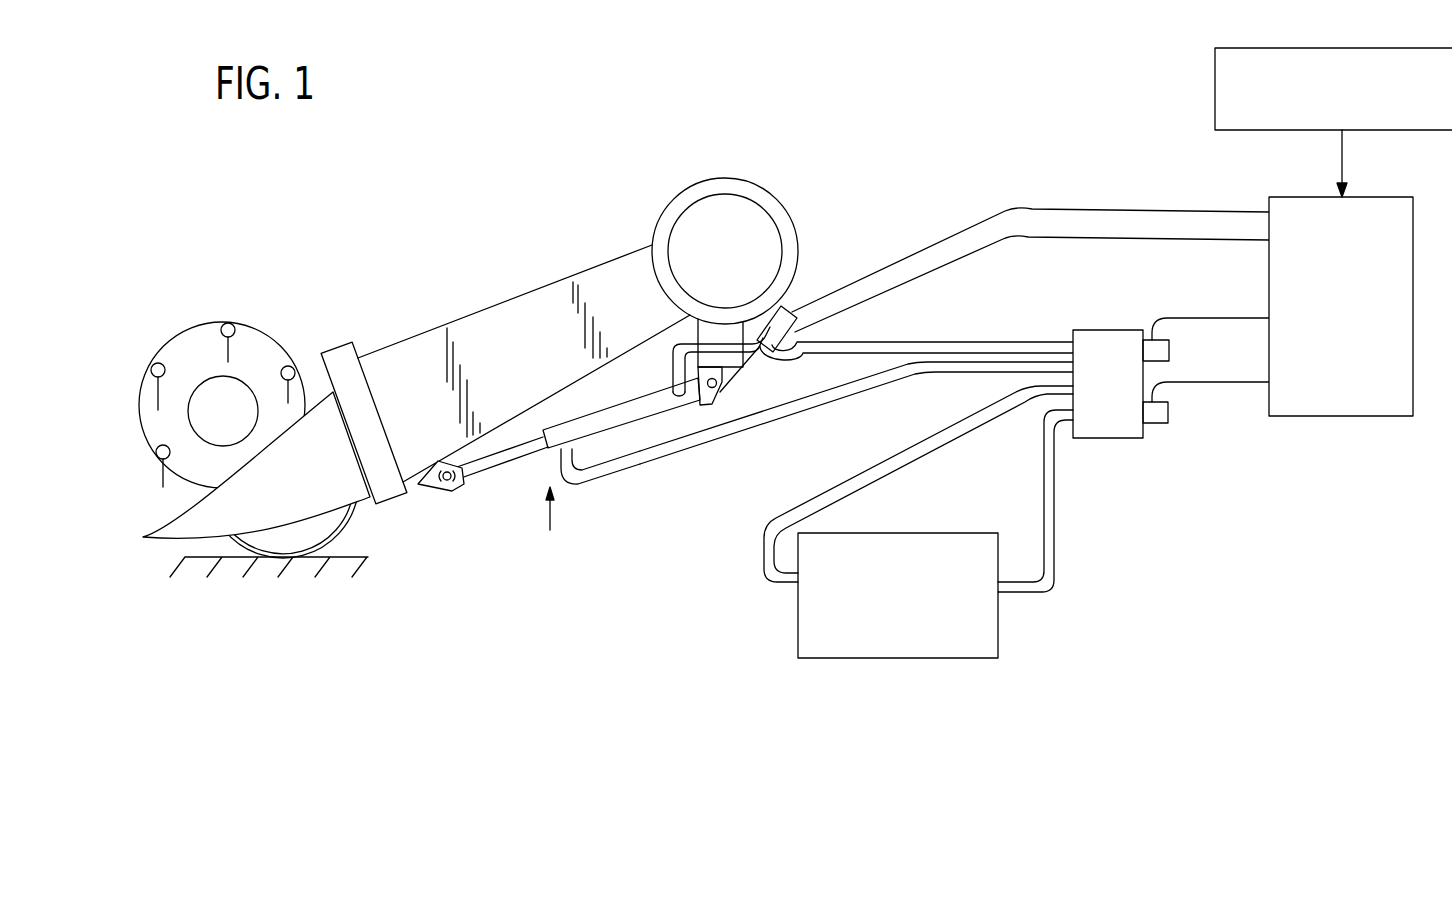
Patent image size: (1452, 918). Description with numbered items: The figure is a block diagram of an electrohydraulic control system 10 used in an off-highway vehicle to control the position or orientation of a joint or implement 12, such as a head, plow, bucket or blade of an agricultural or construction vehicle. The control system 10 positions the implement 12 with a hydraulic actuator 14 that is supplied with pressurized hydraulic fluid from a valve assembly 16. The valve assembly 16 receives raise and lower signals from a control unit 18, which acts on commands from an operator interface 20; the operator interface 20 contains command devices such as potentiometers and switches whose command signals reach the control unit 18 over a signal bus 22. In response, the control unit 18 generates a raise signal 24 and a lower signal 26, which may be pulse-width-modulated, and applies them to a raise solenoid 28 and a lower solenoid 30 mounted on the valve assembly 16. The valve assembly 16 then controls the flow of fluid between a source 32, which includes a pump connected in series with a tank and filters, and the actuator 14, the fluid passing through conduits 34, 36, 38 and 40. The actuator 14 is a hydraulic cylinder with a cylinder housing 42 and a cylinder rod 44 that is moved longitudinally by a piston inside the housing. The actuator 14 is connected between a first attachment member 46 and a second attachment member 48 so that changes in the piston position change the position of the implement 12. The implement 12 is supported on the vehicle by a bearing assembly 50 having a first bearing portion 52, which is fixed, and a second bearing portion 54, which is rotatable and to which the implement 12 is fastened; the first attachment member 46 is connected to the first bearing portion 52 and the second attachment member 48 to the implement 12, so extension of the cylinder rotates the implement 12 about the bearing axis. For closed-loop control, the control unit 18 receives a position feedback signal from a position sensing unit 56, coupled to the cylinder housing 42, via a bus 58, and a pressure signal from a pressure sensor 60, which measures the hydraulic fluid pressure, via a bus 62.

The electrohydraulic control system 10 is at (1192, 626).
The implement 12 is at (337, 348).
The hydraulic actuator 14 is at (549, 527).
The valve assembly 16 is at (1097, 331).
The control unit 18 is at (1320, 417).
The operator interface 20 is at (1215, 88).
The signal bus 22 is at (1340, 157).
The raise signal 24 is at (1217, 317).
The lower signal 26 is at (1220, 383).
The raise solenoid 28 is at (1151, 339).
The lower solenoid 30 is at (1158, 424).
The source 32 is at (898, 533).
The conduit 34 is at (843, 478).
The conduit 36 is at (1055, 510).
The conduit 38 is at (948, 342).
The conduit 40 is at (960, 372).
The cylinder housing 42 is at (603, 407).
The cylinder rod 44 is at (503, 464).
The first attachment member 46 is at (705, 405).
The second attachment member 48 is at (447, 486).
The bearing assembly 50 is at (759, 235).
The first bearing portion 52 is at (797, 247).
The second bearing portion 54 is at (755, 222).
The position sensing unit 56 is at (717, 380).
The bus 58 is at (1040, 238).
The pressure sensor 60 is at (803, 303).
The bus 62 is at (1068, 208).